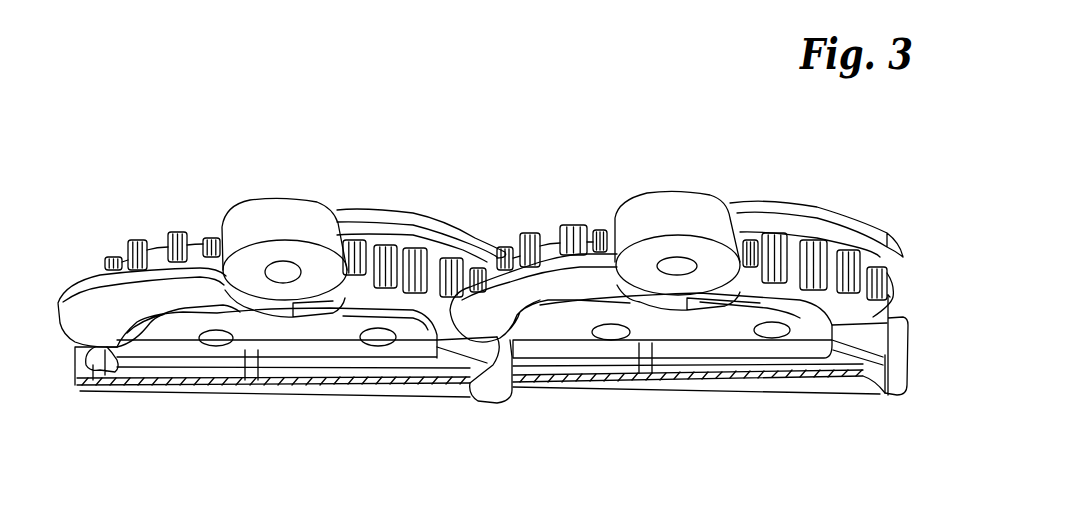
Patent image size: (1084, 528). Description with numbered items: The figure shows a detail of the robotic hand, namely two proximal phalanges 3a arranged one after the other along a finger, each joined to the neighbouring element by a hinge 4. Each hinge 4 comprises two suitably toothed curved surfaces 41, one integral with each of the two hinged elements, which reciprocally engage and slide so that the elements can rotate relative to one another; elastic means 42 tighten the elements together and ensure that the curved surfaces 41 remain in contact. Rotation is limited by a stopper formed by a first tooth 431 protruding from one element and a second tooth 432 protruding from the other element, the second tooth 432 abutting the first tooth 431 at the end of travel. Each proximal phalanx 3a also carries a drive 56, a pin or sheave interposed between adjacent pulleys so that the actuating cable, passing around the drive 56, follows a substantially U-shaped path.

The hinge 4 is at (485, 157).
The curved surface 41 is at (435, 208).
The elastic means 42 is at (163, 198).
The drive 56 is at (290, 198).
The proximal phalanx 3a is at (263, 402).
The first tooth 431 is at (477, 392).
The second tooth 432 is at (81, 391).